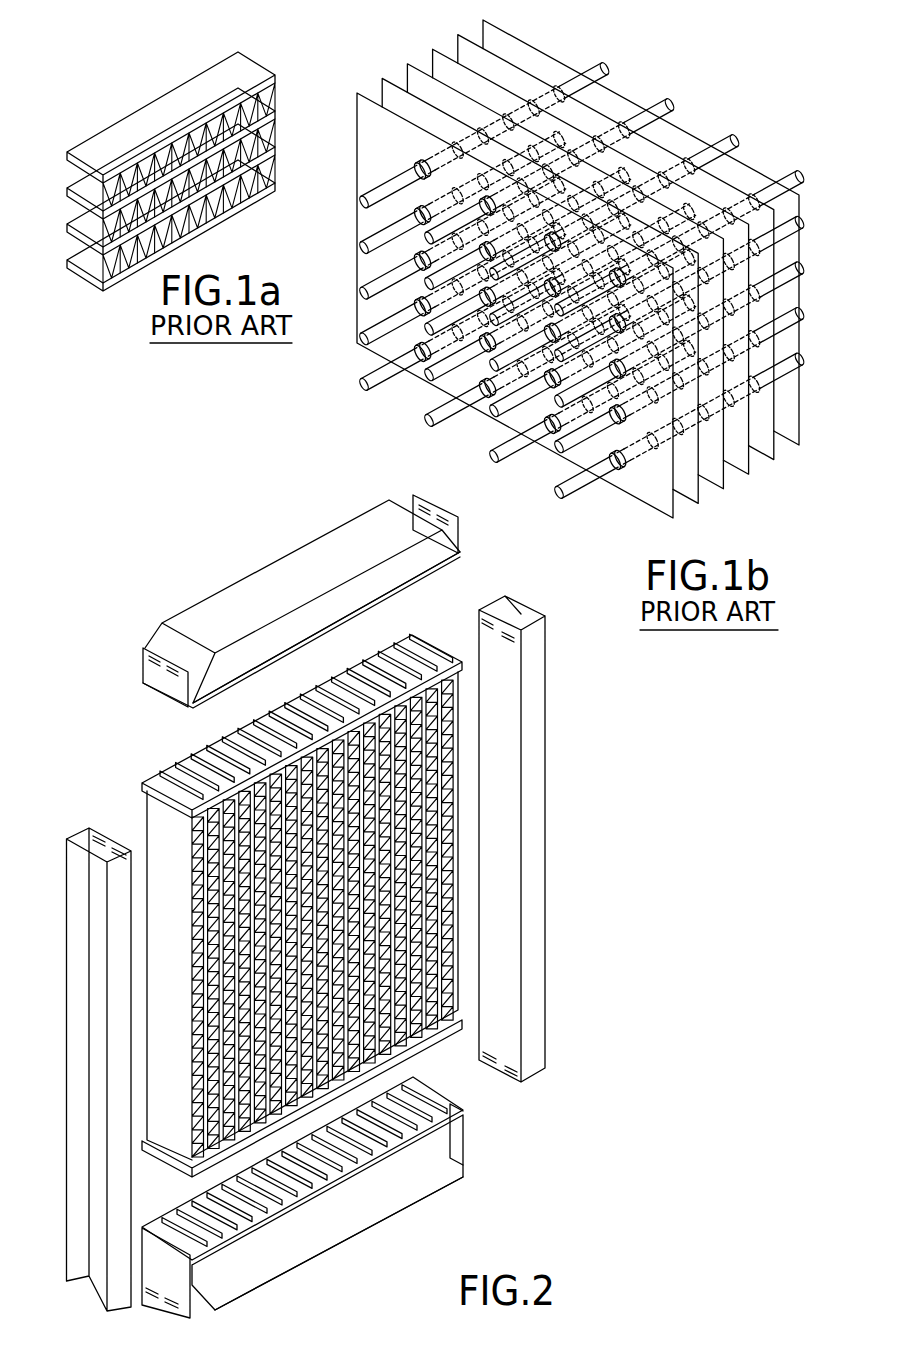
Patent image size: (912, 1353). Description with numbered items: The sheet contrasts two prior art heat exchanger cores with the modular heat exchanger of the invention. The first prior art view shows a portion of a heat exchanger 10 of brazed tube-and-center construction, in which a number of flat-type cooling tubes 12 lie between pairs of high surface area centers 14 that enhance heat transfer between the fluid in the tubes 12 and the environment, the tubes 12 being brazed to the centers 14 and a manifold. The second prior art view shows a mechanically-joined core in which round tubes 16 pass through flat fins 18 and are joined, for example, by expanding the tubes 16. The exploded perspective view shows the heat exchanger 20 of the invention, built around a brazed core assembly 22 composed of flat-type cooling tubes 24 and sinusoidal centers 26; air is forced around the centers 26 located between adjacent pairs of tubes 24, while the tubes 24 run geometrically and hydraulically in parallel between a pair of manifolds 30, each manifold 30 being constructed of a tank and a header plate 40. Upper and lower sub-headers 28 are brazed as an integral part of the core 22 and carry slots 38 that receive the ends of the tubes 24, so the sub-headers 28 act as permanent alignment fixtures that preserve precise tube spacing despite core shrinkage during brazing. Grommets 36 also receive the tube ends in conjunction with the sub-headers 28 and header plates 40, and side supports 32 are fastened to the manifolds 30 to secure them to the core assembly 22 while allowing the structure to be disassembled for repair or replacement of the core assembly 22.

In FIG. 1A, the heat exchanger 10 is at (194, 182).
In FIG. 1A, the flat-type cooling tubes 12 is at (72, 262).
In FIG. 1A, the centers 14 is at (278, 140).
In FIG. 1B, the round tubes 16 is at (372, 350).
In FIG. 1B, the flat fins 18 is at (605, 104).
In FIG. 2, the heat exchanger 20 is at (344, 906).
In FIG. 2, the brazed core assembly 22 is at (160, 855).
In FIG. 2, the flat-type cooling tubes 24 is at (190, 787).
In FIG. 2, the sinusoidal centers 26 is at (440, 676).
In FIG. 2, the sub-headers 28 is at (407, 637).
In FIG. 2, the manifolds 30 is at (216, 605).
In FIG. 2, the side supports 32 is at (77, 838).
In FIG. 2, the grommets 36 is at (467, 553).
In FIG. 2, the slots 38 is at (368, 672).
In FIG. 2, the header plate 40 is at (463, 560).